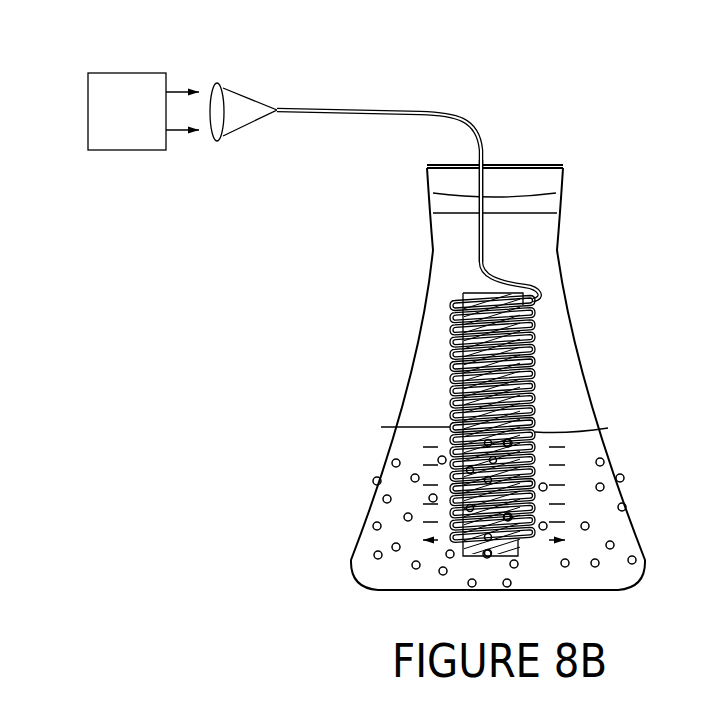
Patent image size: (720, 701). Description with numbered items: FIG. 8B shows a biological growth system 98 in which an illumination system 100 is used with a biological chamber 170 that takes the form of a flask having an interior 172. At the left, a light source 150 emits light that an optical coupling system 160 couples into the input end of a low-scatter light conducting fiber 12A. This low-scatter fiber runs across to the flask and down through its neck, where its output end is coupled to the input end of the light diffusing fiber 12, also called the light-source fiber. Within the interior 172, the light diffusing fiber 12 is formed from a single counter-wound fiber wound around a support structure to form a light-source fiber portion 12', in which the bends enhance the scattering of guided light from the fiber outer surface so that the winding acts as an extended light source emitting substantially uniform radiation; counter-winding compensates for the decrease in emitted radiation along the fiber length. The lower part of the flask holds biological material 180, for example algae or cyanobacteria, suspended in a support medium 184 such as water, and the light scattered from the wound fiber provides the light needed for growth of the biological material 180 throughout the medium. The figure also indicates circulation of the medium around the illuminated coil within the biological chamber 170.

The biological growth system 98 is at (571, 64).
The light source 150 is at (148, 124).
The optical coupling system 160 is at (207, 158).
The low-scatter light conducting fiber 12A is at (382, 110).
The light diffusing fiber 12 is at (509, 211).
The light-source fiber portion 12' is at (429, 427).
The illumination system 100 is at (540, 313).
The biological chamber 170 is at (588, 338).
The interior 172 is at (585, 409).
The biological material 180 is at (604, 486).
The support medium 184 is at (610, 526).